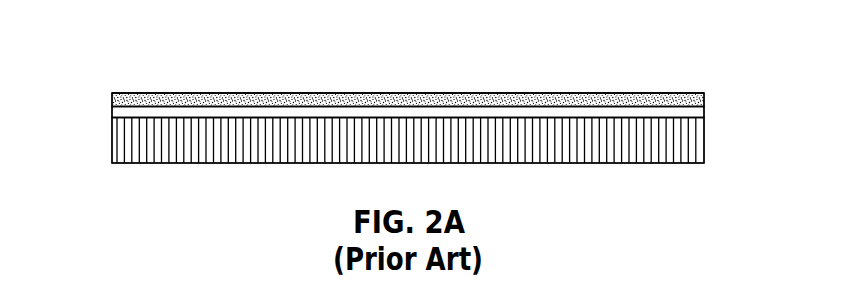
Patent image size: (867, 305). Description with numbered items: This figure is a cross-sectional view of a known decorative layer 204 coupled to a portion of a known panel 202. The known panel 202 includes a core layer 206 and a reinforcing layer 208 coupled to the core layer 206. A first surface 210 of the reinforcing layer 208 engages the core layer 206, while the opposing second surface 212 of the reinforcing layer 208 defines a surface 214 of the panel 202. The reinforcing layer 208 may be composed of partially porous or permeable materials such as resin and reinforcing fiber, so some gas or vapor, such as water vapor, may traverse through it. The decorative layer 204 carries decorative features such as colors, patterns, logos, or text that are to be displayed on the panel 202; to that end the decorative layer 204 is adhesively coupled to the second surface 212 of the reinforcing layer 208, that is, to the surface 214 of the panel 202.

The known panel 202 is at (712, 118).
The known decorative layer 204 is at (683, 93).
The core layer 206 is at (112, 148).
The reinforcing layer 208 is at (112, 113).
The first surface 210 is at (548, 120).
The second surface 212 is at (572, 105).
The surface 214 is at (187, 93).